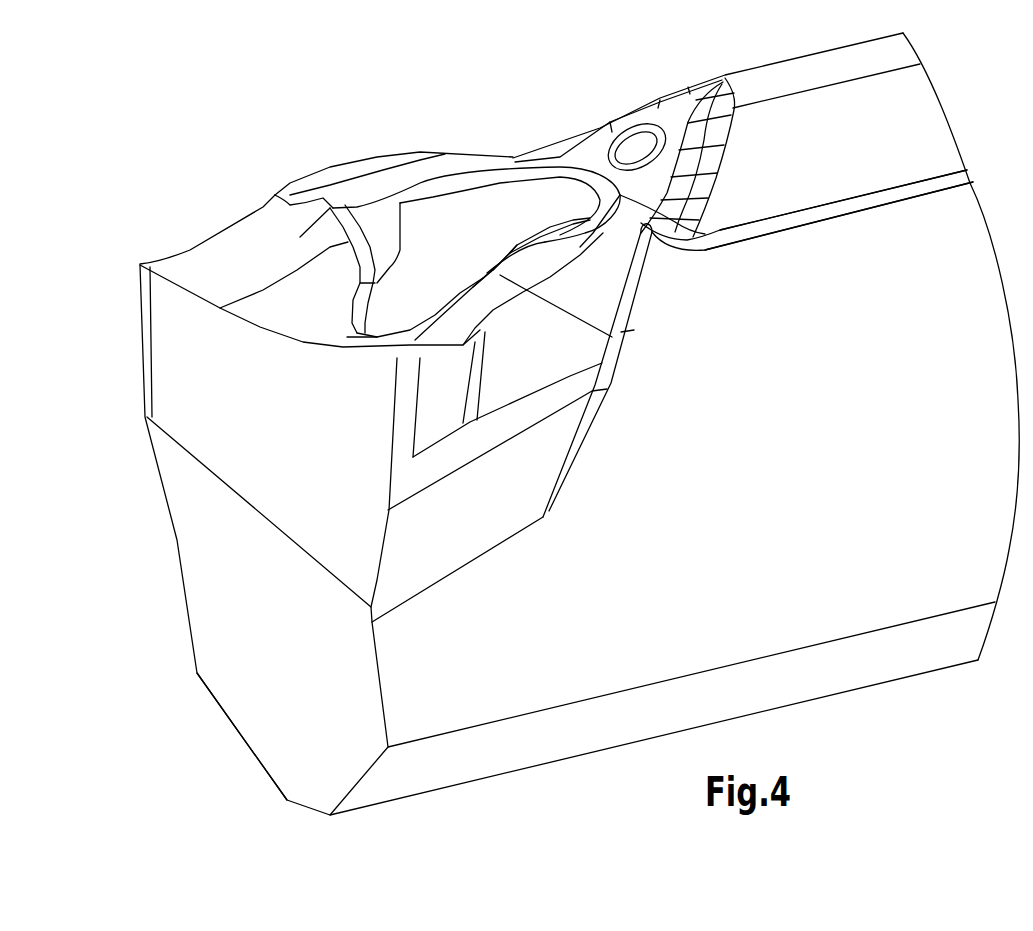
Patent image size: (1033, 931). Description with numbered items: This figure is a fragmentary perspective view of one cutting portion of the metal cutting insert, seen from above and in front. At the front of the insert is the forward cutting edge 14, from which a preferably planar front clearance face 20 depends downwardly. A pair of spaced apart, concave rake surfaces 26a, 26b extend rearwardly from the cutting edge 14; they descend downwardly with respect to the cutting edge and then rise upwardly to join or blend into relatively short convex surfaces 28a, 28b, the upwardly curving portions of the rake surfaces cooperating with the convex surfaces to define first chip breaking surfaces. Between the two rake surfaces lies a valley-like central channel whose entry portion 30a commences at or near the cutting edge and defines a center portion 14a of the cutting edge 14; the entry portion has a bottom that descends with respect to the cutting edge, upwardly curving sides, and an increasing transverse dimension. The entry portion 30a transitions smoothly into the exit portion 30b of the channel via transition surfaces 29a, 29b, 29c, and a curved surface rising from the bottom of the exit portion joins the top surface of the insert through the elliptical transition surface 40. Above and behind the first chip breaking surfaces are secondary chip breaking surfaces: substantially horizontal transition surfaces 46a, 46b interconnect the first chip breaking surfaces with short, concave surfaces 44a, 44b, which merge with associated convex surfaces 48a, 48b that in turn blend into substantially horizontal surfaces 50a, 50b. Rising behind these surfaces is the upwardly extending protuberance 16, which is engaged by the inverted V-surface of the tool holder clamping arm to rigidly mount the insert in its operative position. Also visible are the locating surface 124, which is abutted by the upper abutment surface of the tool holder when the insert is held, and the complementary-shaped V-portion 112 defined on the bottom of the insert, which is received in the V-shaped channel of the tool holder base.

The cutting edge 14 is at (162, 294).
The center portion of the cutting edge 14a is at (220, 308).
The protuberance 16 is at (846, 150).
The front clearance face 20 is at (286, 448).
The locating surface 124 is at (285, 655).
The V-portion 112 is at (567, 732).
The elliptical transition surface 40 is at (527, 167).
The concave rake surface 26a is at (483, 308).
The concave rake surface 26b is at (247, 252).
The convex surface 28a is at (512, 282).
The convex surface 28b is at (273, 194).
The transition surface 29a is at (363, 307).
The transition surface 29b is at (347, 255).
The transition surface 29c is at (373, 231).
The entry portion of the channel 30a is at (302, 320).
The exit portion of the channel 30b is at (471, 263).
The concave surface 44a is at (560, 280).
The concave surface 44b is at (333, 166).
The transition surface 46a is at (593, 327).
The transition surface 46b is at (300, 193).
The convex surface 48a is at (573, 258).
The convex surface 48b is at (338, 170).
The substantially horizontal surface 50a is at (595, 235).
The substantially horizontal surface 50b is at (424, 163).